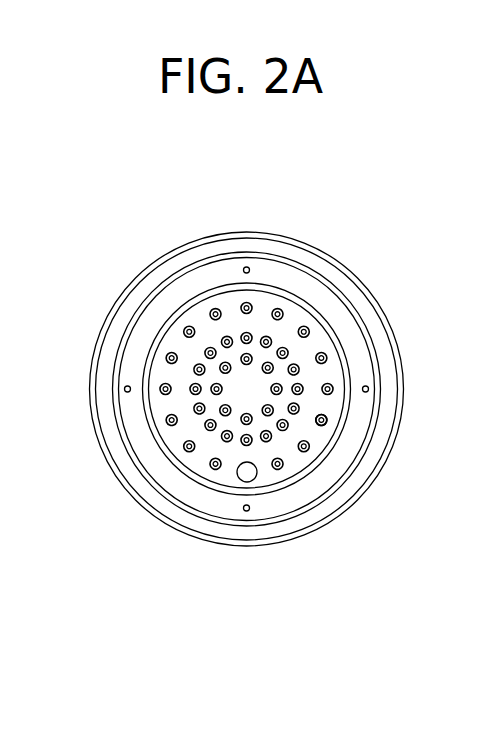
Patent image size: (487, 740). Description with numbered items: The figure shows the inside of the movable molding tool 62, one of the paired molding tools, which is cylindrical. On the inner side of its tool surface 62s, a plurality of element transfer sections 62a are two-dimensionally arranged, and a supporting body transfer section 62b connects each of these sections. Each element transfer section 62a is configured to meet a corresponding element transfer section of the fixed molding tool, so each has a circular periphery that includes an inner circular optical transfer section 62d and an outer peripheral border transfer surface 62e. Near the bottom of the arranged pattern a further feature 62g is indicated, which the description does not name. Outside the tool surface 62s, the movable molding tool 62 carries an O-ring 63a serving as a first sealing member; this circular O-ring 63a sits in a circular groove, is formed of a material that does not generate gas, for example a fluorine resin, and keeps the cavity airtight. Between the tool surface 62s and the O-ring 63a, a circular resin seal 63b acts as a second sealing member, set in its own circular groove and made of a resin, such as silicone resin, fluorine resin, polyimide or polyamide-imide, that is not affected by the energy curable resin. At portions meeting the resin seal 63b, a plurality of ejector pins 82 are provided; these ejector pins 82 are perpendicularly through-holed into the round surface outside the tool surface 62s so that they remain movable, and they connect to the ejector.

The movable molding tool 62 is at (390, 280).
The tool surface 62s is at (293, 310).
The element transfer sections 62a is at (311, 332).
The supporting body transfer section 62b is at (330, 407).
The inner circular optical transfer section 62d is at (327, 426).
The outer peripheral border transfer surface 62e is at (328, 423).
The center hole 62g is at (240, 480).
The O-ring 63a is at (203, 527).
The resin seal 63b is at (282, 507).
The ejector pins 82 is at (246, 267).